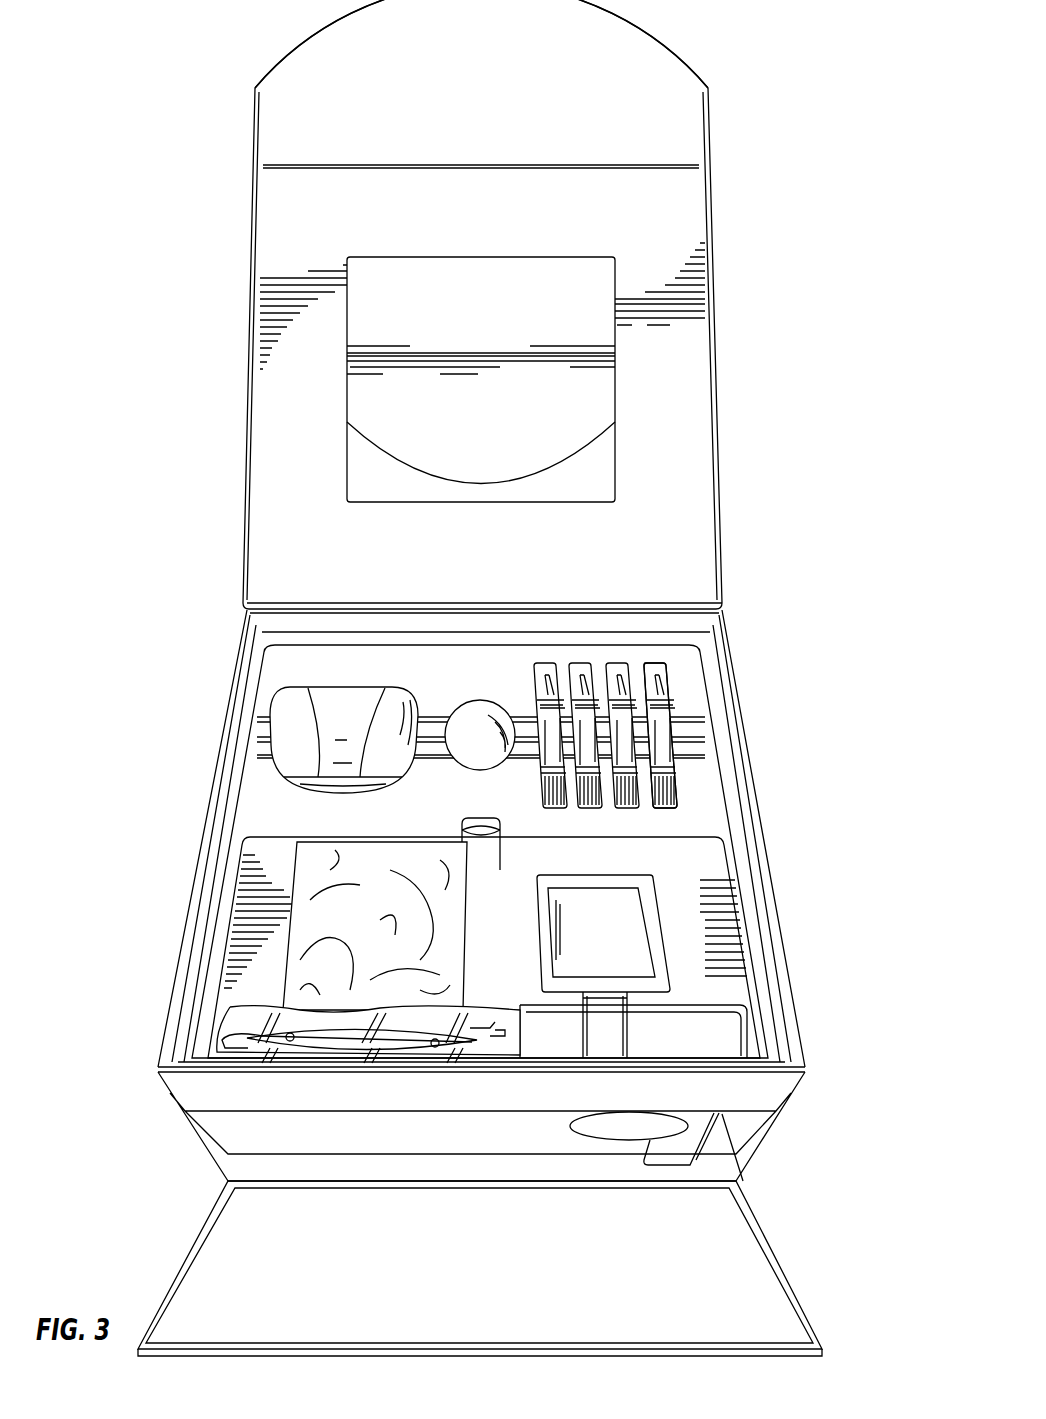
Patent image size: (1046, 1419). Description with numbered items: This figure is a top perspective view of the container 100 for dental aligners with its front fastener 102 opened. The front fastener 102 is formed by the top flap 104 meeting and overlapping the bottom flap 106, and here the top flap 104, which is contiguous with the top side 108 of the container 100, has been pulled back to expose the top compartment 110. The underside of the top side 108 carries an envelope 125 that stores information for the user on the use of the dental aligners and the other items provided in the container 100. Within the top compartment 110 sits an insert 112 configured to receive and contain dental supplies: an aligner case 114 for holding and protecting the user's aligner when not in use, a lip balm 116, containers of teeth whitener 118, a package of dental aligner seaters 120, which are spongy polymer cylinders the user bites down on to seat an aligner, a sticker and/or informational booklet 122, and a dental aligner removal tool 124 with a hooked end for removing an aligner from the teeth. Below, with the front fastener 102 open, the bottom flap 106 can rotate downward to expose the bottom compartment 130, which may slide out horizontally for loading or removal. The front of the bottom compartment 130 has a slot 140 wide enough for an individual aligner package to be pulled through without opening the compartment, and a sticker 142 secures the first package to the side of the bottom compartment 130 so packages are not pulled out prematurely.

The container 100 is at (762, 460).
The front fastener 102 is at (250, 47).
The top flap 104 is at (678, 94).
The bottom flap 106 is at (210, 1278).
The top side 108 is at (654, 246).
The top compartment 110 is at (770, 822).
The insert 112 is at (683, 672).
The aligner case 114 is at (297, 743).
The lip balm 116 is at (480, 753).
The containers of teeth whitener 118 is at (677, 785).
The package of dental aligner seaters 120 is at (307, 887).
The sticker and/or informational booklet 122 is at (638, 933).
The dental aligner removal tool 124 is at (220, 1035).
The envelope 125 is at (578, 382).
The bottom compartment 130 is at (795, 1131).
The slot 140 is at (711, 1143).
The sticker 142 is at (586, 1123).